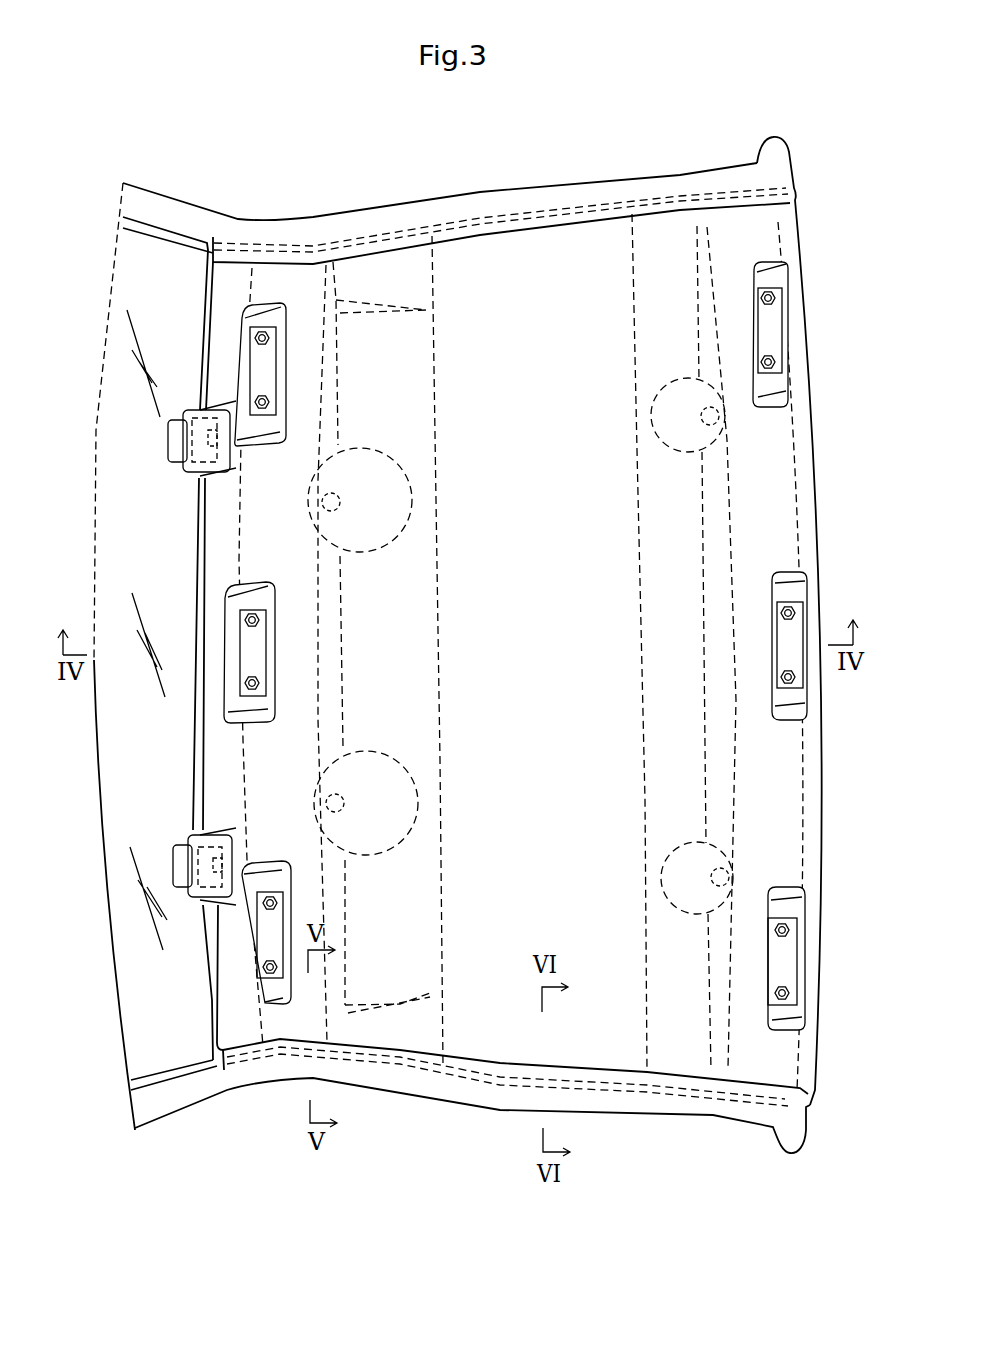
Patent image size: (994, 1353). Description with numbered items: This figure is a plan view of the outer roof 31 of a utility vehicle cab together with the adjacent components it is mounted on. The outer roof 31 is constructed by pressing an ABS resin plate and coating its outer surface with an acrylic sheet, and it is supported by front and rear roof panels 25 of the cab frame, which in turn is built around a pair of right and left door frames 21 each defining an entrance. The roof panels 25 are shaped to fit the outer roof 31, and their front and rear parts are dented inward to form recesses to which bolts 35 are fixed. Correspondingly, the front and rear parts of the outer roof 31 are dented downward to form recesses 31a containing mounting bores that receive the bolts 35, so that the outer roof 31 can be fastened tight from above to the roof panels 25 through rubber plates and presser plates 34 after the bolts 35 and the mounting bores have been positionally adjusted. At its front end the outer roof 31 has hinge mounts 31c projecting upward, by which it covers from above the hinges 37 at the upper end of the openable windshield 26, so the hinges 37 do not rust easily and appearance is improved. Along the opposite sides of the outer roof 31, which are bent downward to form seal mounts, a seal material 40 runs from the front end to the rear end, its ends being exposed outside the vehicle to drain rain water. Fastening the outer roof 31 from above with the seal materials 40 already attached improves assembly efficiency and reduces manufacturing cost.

The door frame 21 is at (408, 212).
The roof panel 25 is at (407, 402).
The windshield 26 is at (133, 920).
The outer roof 31 is at (548, 253).
The recess 31a is at (253, 423).
The hinge mount 31c is at (197, 440).
The presser plate 34 is at (254, 368).
The bolt 35 is at (254, 338).
The hinge 37 is at (175, 433).
The seal material 40 is at (313, 243).